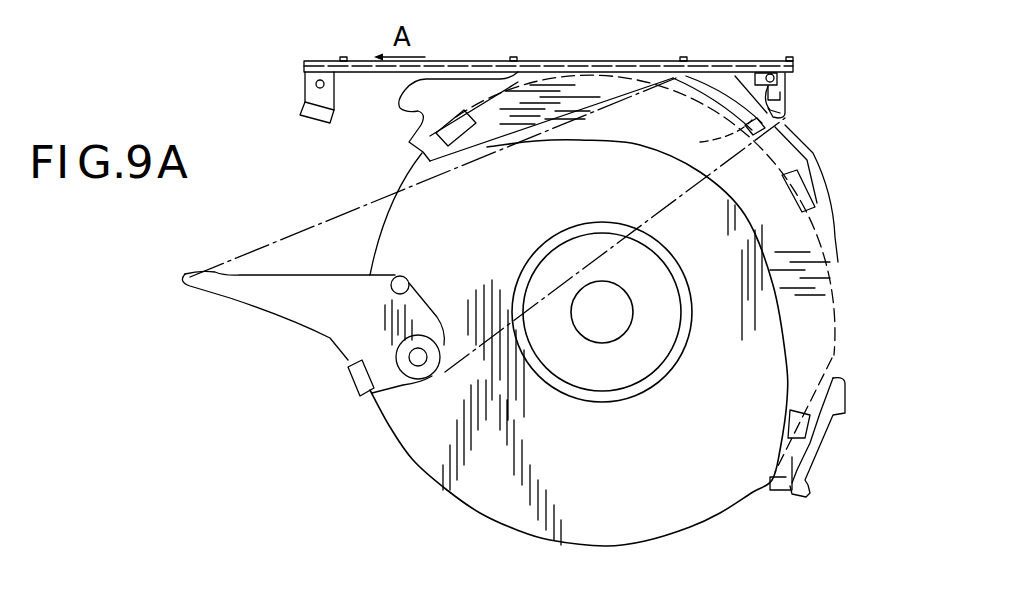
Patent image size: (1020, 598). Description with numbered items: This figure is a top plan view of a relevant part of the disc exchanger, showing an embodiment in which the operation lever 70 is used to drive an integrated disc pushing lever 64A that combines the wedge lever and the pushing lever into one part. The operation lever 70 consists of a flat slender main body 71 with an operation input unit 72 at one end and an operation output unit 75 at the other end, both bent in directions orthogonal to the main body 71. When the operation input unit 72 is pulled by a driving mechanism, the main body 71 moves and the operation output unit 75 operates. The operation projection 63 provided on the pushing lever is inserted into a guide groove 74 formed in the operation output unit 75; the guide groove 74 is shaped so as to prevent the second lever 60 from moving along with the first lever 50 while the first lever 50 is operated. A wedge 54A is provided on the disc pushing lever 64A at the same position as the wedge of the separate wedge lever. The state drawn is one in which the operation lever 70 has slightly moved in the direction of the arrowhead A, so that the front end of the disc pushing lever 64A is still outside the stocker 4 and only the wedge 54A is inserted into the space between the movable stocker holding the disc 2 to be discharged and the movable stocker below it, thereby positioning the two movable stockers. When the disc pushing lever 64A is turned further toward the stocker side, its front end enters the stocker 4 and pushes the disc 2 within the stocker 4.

The disc 2 is at (725, 483).
The stocker 4 is at (822, 268).
The first lever 50 is at (790, 132).
The wedge 54A is at (352, 395).
The second lever 60 is at (806, 123).
The operation projection 63 is at (772, 74).
The disc pushing lever 64A is at (315, 330).
The operation lever 70 is at (310, 52).
The main body 71 is at (372, 73).
The operation input unit 72 is at (304, 78).
The guide groove 74 is at (788, 90).
The operation output unit 75 is at (805, 72).